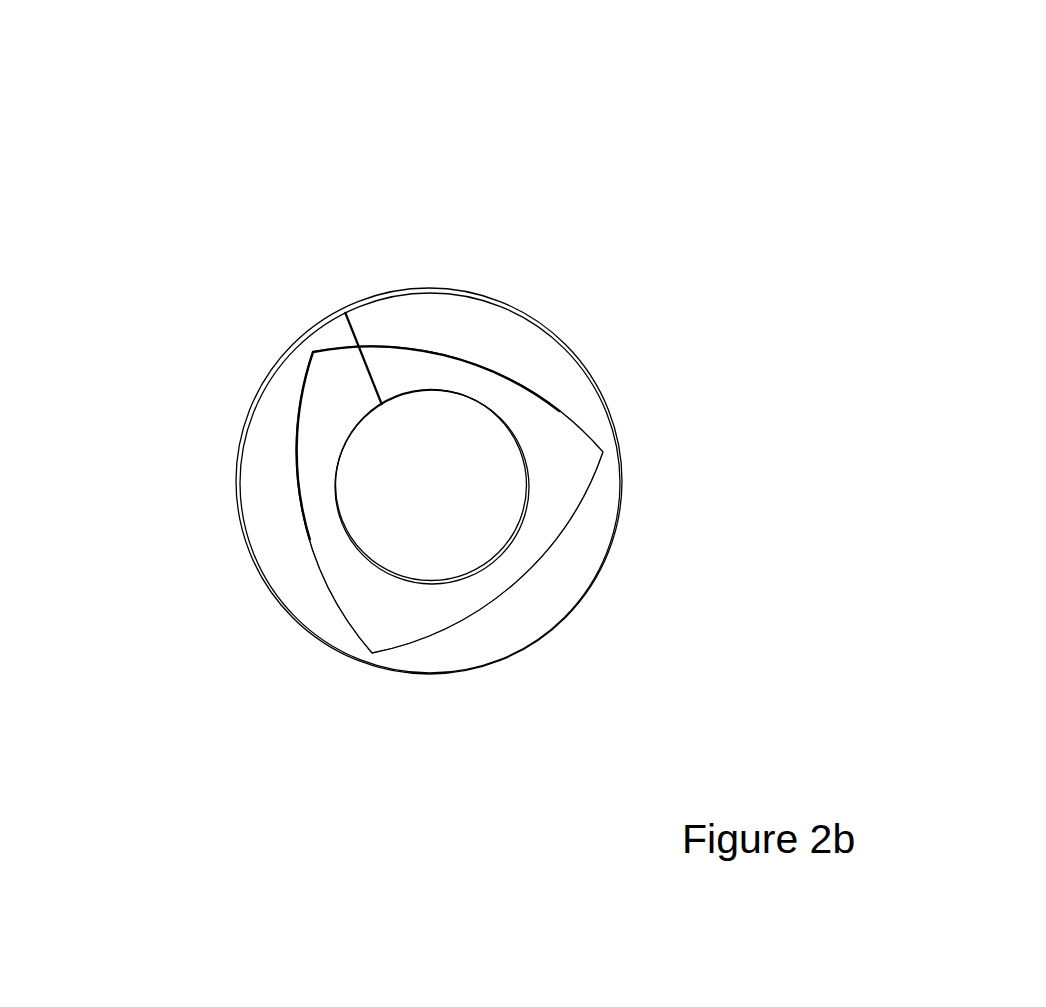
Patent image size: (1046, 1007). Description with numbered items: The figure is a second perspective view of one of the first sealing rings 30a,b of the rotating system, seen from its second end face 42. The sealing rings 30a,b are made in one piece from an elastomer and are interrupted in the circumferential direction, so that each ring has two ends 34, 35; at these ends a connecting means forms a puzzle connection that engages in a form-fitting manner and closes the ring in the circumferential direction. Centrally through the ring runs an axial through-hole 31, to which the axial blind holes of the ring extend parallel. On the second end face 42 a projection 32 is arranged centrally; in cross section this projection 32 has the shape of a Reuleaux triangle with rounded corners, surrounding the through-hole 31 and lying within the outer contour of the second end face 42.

The first sealing rings 30a,b is at (634, 547).
The axial through-hole 31 is at (467, 570).
The projection 32 is at (338, 558).
The end 34 is at (298, 368).
The end 35 is at (388, 320).
The second end face 42 is at (530, 350).